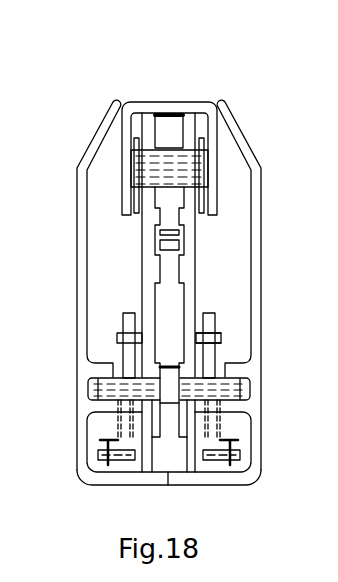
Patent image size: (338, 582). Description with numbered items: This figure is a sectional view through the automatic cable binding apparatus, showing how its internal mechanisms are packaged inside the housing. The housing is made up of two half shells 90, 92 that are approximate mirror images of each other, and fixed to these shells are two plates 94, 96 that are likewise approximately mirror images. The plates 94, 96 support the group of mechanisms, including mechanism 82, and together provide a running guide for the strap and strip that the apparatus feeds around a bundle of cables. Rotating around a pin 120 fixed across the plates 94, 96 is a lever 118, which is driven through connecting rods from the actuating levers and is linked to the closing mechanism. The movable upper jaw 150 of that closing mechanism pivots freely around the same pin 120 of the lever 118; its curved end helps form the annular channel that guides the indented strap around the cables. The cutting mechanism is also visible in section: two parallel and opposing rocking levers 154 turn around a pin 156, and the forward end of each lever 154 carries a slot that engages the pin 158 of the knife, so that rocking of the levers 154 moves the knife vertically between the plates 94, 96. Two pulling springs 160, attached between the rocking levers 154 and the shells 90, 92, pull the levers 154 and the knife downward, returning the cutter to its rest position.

The mechanism 82 is at (175, 297).
The half shell 90 is at (256, 173).
The half shell 92 is at (81, 172).
The plate 94 is at (188, 417).
The plate 96 is at (150, 280).
The lever 118 is at (167, 128).
The pin 120 is at (150, 160).
The movable upper jaw 150 is at (185, 108).
The rocking lever 154 is at (117, 320).
The pin 156 is at (103, 388).
The pin 158 is at (217, 337).
The pulling spring 160 is at (110, 432).